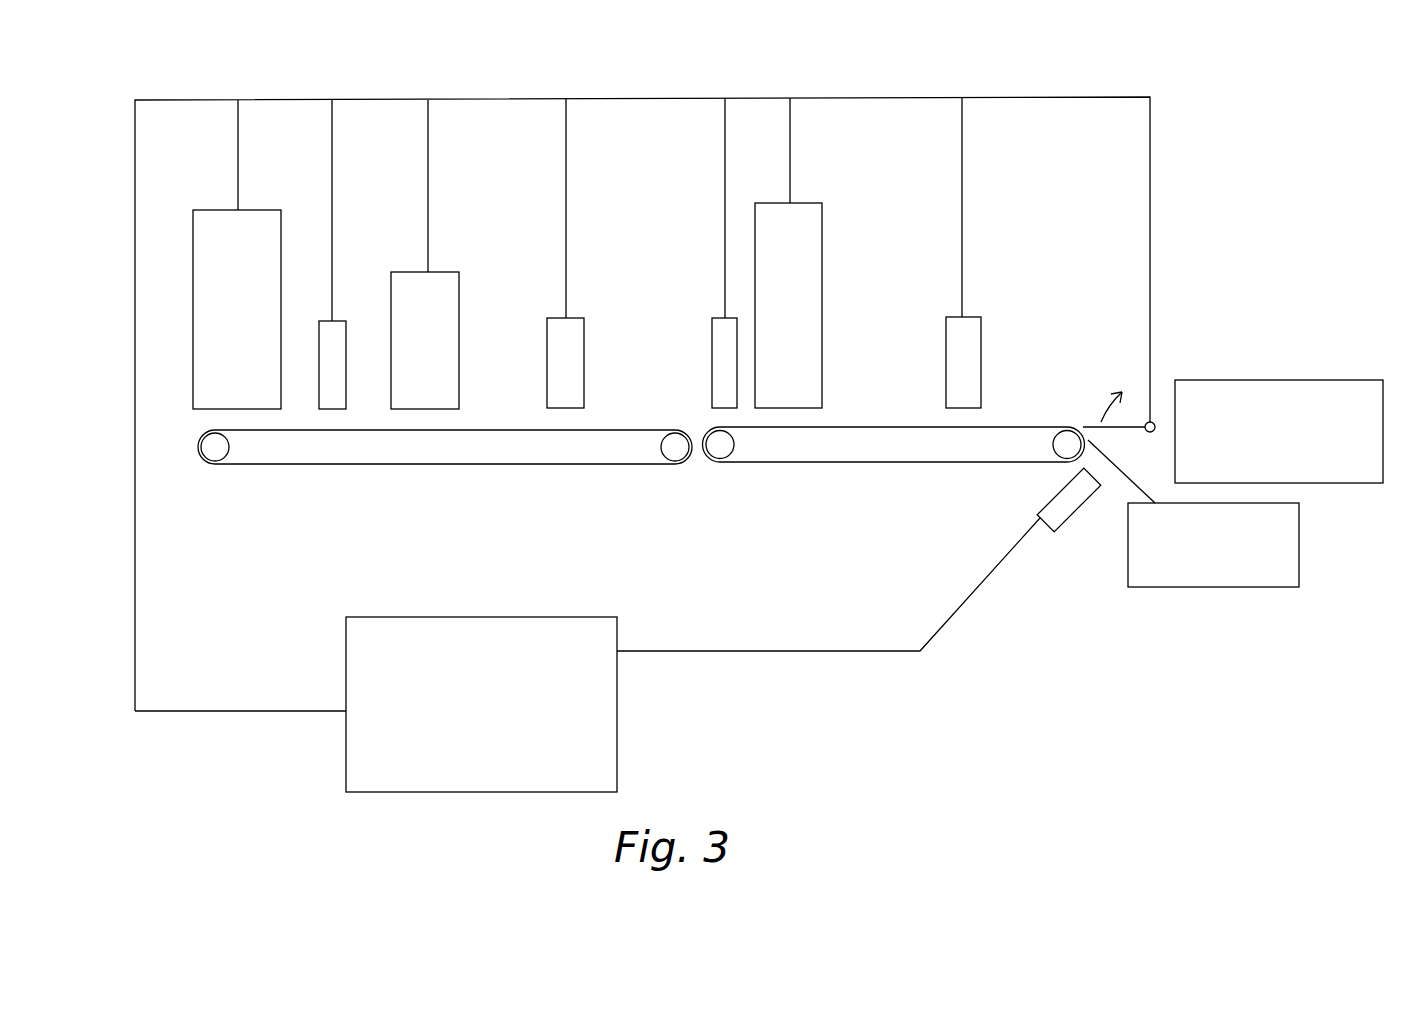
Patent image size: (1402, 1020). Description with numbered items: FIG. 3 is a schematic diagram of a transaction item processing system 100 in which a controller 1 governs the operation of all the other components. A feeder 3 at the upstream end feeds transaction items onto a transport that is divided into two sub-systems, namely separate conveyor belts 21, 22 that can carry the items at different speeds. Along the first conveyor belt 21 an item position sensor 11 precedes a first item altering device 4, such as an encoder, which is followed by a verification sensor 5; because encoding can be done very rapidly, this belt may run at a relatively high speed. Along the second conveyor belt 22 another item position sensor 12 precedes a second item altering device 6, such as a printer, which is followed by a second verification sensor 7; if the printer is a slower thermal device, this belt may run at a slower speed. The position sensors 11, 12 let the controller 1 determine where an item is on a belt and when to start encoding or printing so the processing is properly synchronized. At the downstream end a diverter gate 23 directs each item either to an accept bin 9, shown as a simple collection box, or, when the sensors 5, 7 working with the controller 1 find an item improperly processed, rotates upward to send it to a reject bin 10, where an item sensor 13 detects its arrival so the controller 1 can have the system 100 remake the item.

The transaction item processing system 100 is at (111, 99).
The controller 1 is at (368, 617).
The feeder 3 is at (203, 207).
The first item altering device 4 is at (391, 287).
The sensor 5 is at (547, 335).
The second item altering device 6 is at (822, 215).
The sensor 7 is at (946, 335).
The accept bin 9 is at (1350, 380).
The reject bin 10 is at (1300, 522).
The item position sensor 11 is at (319, 335).
The item position sensor 12 is at (712, 330).
The item sensor 13 is at (1071, 514).
The conveyor belt 21 is at (262, 466).
The conveyor belt 22 is at (768, 463).
The diverter gate 23 is at (1090, 424).